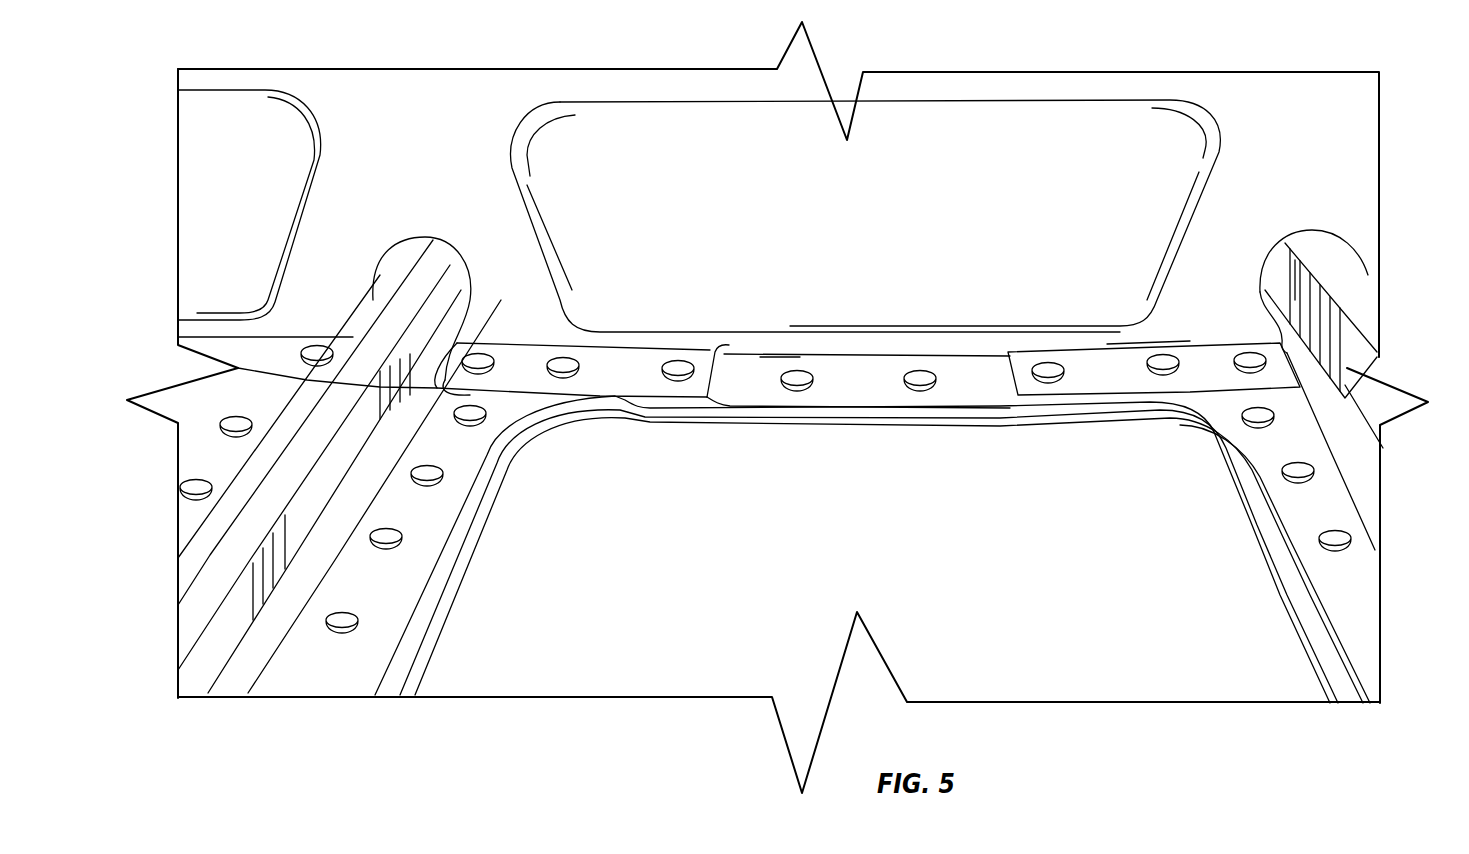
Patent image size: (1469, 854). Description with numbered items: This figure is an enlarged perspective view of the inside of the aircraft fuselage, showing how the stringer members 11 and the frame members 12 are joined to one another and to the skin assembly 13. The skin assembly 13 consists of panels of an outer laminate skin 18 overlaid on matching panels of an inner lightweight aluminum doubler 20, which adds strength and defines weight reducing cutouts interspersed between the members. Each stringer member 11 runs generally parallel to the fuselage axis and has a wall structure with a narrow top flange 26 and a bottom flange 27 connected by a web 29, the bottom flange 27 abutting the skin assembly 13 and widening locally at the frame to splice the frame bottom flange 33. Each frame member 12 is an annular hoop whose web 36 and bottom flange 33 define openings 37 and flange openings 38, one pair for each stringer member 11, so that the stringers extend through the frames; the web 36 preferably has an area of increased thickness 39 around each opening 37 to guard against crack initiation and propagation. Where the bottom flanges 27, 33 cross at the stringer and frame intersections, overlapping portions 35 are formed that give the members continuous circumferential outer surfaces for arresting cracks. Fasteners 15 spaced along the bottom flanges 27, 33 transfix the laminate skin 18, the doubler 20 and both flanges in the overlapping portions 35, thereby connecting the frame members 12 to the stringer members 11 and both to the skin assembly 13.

The stringer member 11 is at (447, 258).
The frame member 12 is at (1315, 120).
The skin assembly 13 is at (1270, 687).
The fastener 15 is at (342, 632).
The laminate skin 18 is at (720, 601).
The doubler 20 is at (482, 533).
The top flange 26 is at (412, 308).
The bottom flange 27 is at (440, 498).
The web 29 is at (310, 503).
The bottom flange 33 is at (640, 368).
The overlapping portion 35 is at (525, 368).
The web 36 is at (957, 228).
The opening 37 is at (395, 240).
The flange opening 38 is at (458, 345).
The area of increased thickness 39 is at (325, 205).